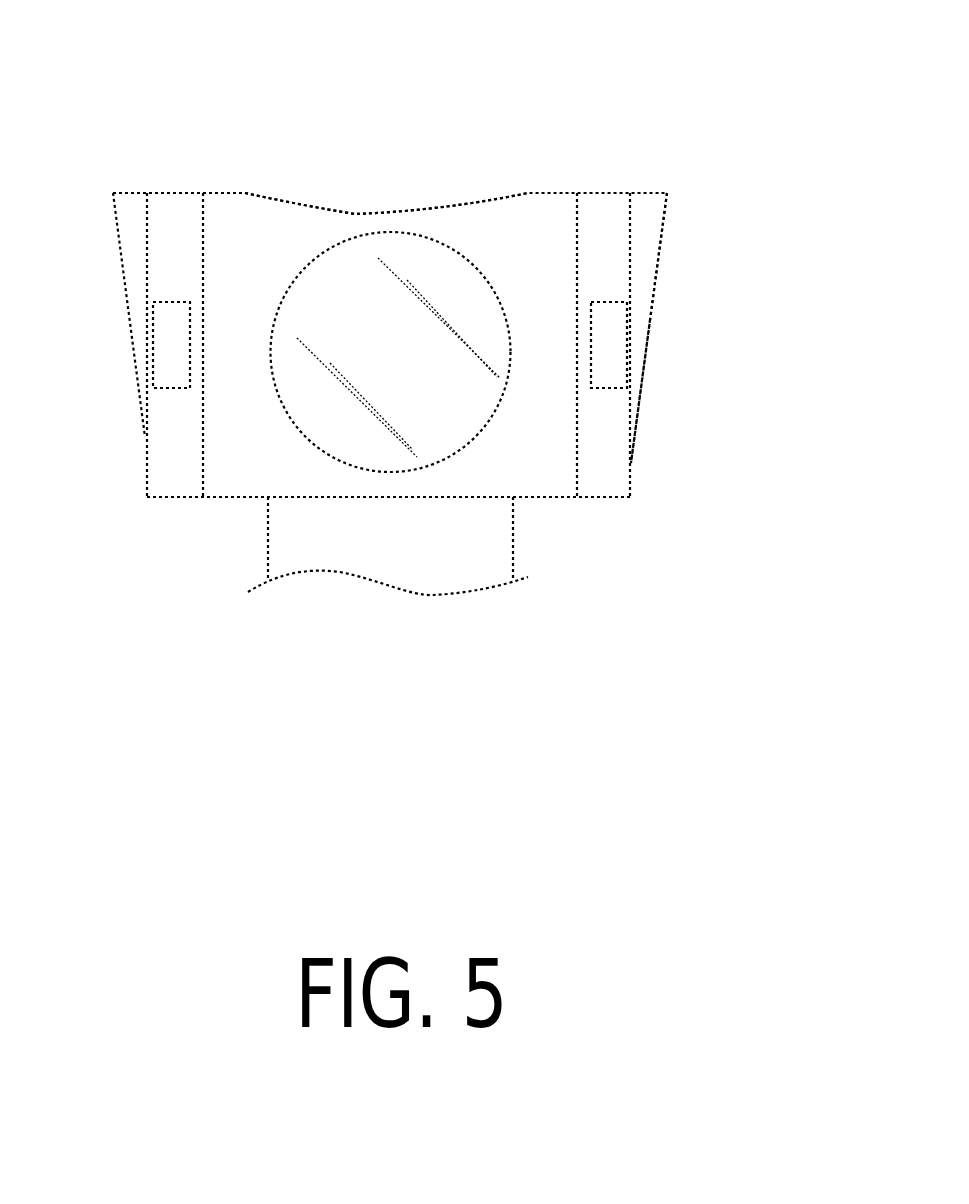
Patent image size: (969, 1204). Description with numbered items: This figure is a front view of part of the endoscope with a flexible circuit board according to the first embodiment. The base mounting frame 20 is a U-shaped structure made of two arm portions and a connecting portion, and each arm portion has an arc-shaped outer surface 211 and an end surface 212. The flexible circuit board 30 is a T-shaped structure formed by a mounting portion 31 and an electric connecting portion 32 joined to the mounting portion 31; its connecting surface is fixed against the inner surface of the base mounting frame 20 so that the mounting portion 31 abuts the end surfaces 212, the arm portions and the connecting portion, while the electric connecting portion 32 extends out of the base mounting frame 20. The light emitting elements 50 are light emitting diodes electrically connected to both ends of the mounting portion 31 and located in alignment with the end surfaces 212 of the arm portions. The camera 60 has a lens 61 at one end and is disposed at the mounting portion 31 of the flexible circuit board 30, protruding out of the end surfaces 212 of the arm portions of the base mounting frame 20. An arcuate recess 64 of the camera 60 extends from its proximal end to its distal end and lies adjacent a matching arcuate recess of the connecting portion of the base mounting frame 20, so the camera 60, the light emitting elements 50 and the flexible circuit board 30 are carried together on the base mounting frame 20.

The base mounting frame 20 is at (612, 150).
The arcuate recess 64 is at (355, 213).
The mounting portion 31 is at (607, 237).
The end surface 212 is at (642, 247).
The arc-shaped outer surface 211 is at (657, 292).
The light emitting element 50 is at (640, 362).
The flexible circuit board 30 is at (645, 480).
The camera 60 is at (202, 528).
The electric connecting portion 32 is at (420, 410).
The lens 61 is at (442, 540).